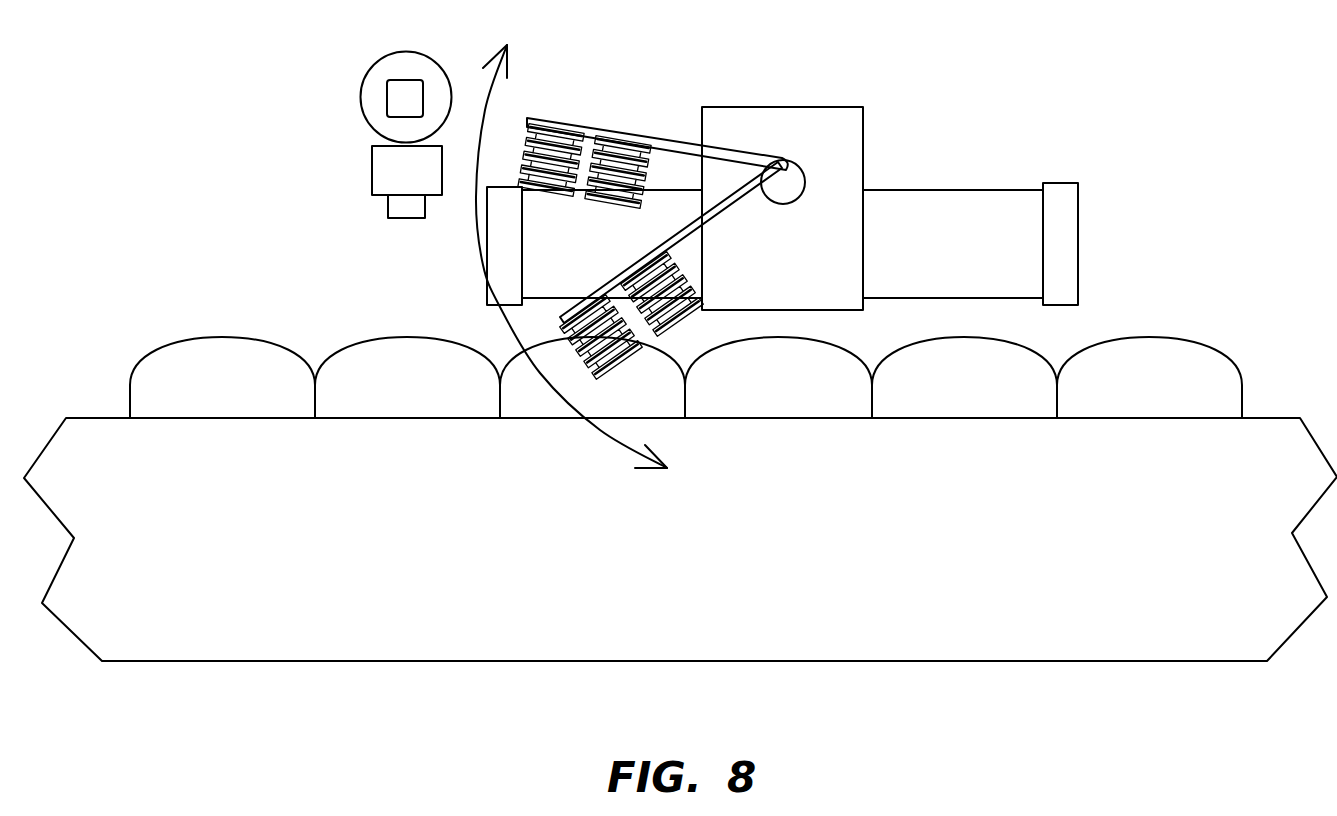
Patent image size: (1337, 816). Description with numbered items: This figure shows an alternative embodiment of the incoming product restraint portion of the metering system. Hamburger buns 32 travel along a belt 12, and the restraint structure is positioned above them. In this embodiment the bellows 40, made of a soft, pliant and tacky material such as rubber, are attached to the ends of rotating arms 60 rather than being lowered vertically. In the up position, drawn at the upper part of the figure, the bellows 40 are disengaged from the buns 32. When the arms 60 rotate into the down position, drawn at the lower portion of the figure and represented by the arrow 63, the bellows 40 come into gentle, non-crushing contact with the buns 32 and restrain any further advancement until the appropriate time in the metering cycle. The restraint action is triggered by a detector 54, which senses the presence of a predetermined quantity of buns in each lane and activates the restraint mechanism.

The belt 12 is at (100, 440).
The hamburger buns 32 is at (347, 360).
The bellows 40 is at (620, 157).
The detector 54 is at (370, 105).
The rotating arms 60 is at (668, 140).
The arrow 63 is at (476, 197).